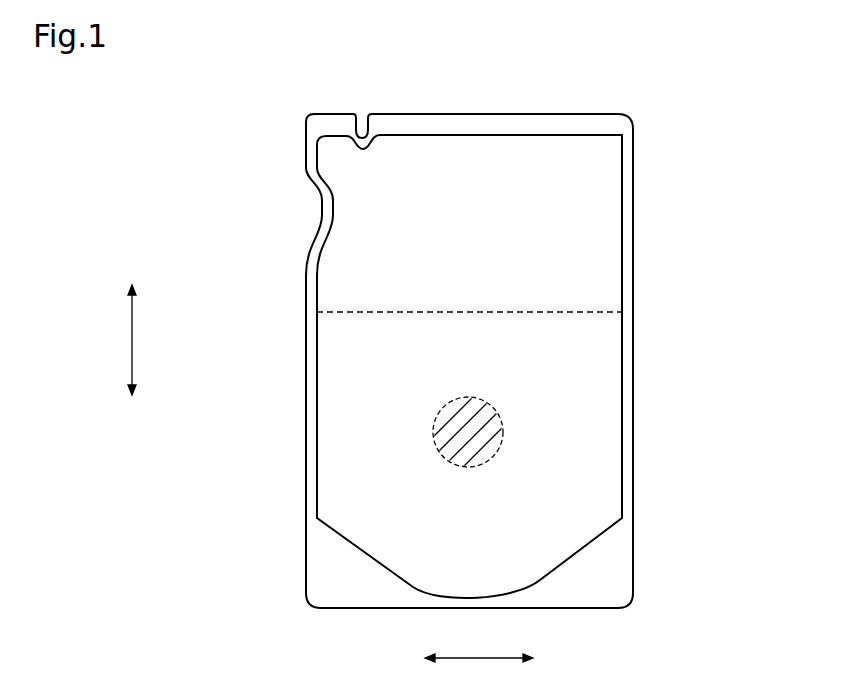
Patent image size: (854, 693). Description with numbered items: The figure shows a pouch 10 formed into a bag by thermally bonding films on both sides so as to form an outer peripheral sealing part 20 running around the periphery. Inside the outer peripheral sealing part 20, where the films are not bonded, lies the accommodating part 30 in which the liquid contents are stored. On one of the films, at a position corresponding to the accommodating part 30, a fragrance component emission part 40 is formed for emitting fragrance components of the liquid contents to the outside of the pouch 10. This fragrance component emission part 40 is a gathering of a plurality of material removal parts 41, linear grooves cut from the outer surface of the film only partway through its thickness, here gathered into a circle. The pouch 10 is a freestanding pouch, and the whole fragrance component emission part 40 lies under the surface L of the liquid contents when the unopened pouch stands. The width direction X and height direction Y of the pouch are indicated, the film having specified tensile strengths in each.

The pouch 10 is at (220, 101).
The outer peripheral sealing part 20 is at (441, 124).
The accommodating part 30 is at (483, 356).
The fragrance component emission part 40 is at (726, 380).
The material removal parts 41 is at (472, 411).
The surface of the liquid contents L is at (368, 312).
The width direction X is at (479, 644).
The height direction Y is at (120, 340).